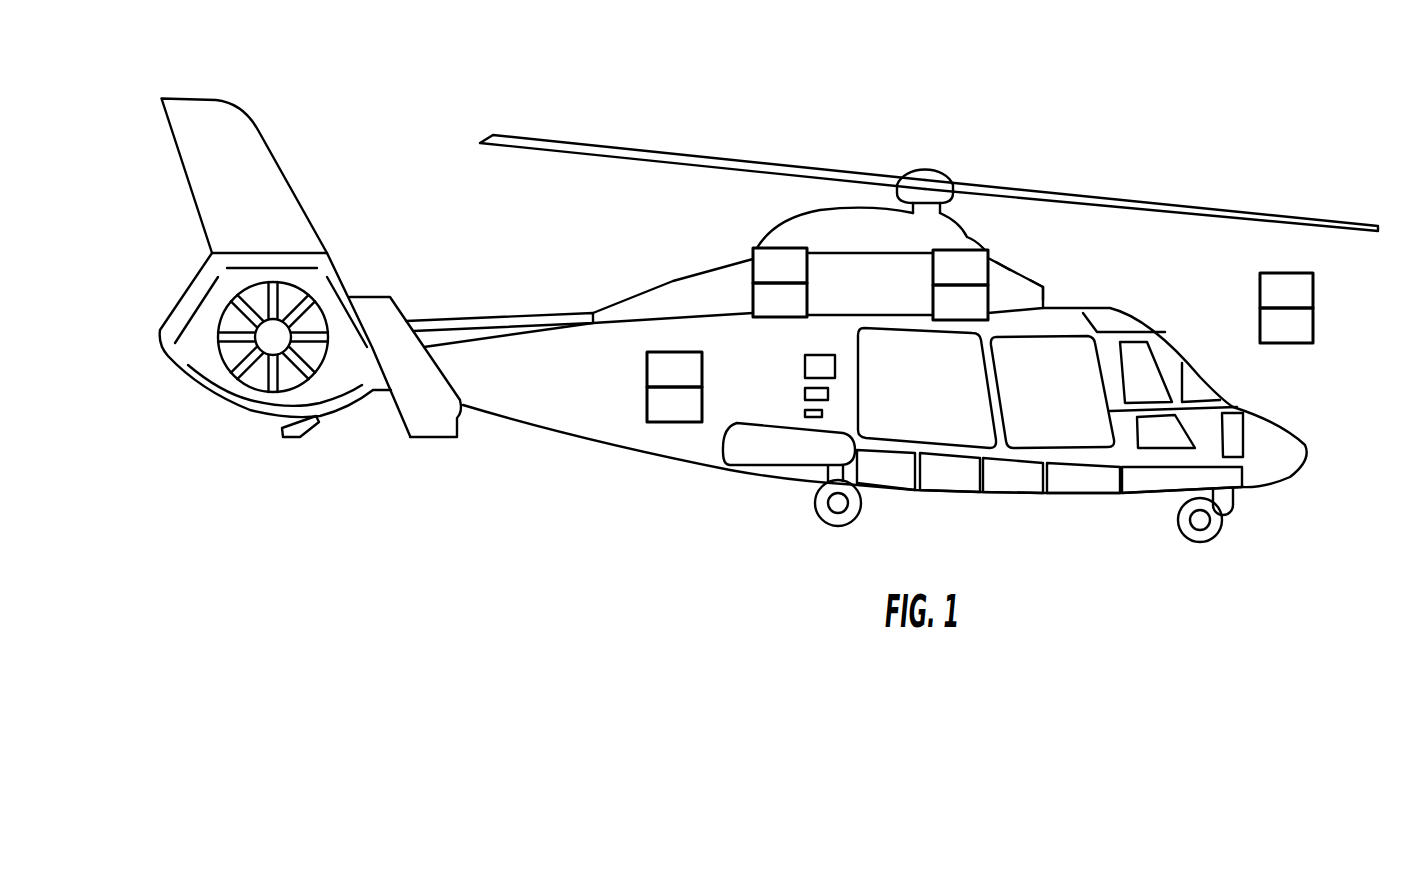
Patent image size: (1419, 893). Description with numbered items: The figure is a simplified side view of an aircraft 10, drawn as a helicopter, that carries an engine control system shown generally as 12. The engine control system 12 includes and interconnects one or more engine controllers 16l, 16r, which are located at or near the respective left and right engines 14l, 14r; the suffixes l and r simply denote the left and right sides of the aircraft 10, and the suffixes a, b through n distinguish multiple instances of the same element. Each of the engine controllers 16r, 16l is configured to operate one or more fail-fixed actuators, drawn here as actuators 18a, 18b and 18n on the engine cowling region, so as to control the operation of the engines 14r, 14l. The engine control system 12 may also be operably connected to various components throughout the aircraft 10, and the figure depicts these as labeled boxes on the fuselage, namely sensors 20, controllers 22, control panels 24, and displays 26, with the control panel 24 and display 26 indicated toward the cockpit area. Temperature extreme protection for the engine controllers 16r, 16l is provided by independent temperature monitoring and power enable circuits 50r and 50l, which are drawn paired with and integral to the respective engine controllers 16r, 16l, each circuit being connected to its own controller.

The aircraft 10 is at (764, 560).
The engine control system 12 is at (1248, 114).
The right engine 14r is at (797, 122).
The left engine 14l is at (1025, 278).
The right engine controller 16r is at (780, 300).
The left engine controller 16l is at (960, 302).
The fail-fixed actuator 18n is at (1003, 268).
The fail-fixed actuator 18a is at (1043, 292).
The fail-fixed actuator 18b is at (1037, 280).
The sensors 20 is at (674, 404).
The controllers 22 is at (674, 369).
The control panels 24 is at (1206, 370).
The displays 26 is at (1286, 290).
The right temperature monitoring and power enable circuit 50r is at (780, 265).
The left temperature monitoring and power enable circuit 50l is at (960, 267).